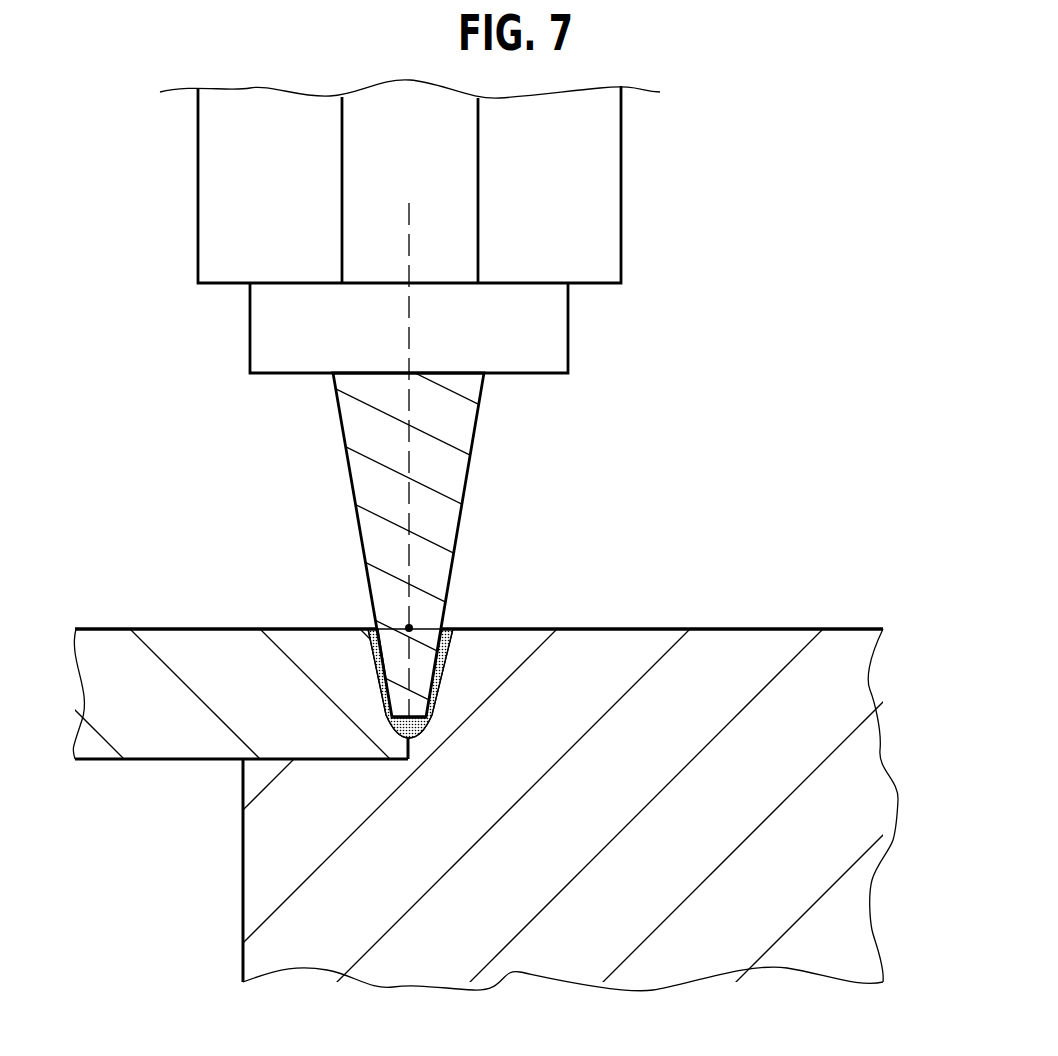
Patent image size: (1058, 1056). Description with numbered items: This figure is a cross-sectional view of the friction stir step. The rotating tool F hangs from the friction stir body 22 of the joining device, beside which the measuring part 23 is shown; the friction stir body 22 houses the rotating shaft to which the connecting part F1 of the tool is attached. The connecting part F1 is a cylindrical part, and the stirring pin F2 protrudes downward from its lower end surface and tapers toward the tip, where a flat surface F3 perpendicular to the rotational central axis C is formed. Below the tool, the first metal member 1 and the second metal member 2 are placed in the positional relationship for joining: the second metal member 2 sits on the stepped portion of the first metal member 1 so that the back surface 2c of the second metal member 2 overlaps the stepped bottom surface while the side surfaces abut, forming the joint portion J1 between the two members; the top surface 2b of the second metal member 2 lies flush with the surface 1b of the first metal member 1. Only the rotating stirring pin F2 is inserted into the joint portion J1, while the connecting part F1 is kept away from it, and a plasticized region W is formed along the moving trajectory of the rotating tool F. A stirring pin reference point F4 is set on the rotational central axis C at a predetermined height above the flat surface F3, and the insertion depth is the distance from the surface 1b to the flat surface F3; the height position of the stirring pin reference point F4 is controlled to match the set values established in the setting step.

The first metal member 1 is at (609, 549).
The surface of the first metal member 1b is at (625, 627).
The second metal member 2 is at (227, 683).
The top surface of second member 2b is at (158, 627).
The back surface of the second metal member 2c is at (146, 762).
The friction stir body 22 is at (451, 184).
The measuring part 23 is at (353, 155).
The rotational central axis C is at (412, 232).
The rotating tool F is at (486, 473).
The connecting part F1 is at (552, 325).
The stirring pin F2 is at (492, 570).
The flat surface F3 is at (421, 735).
The stirring pin reference point F4 is at (410, 628).
The joint portion J1 is at (408, 616).
The plasticized region W is at (366, 664).